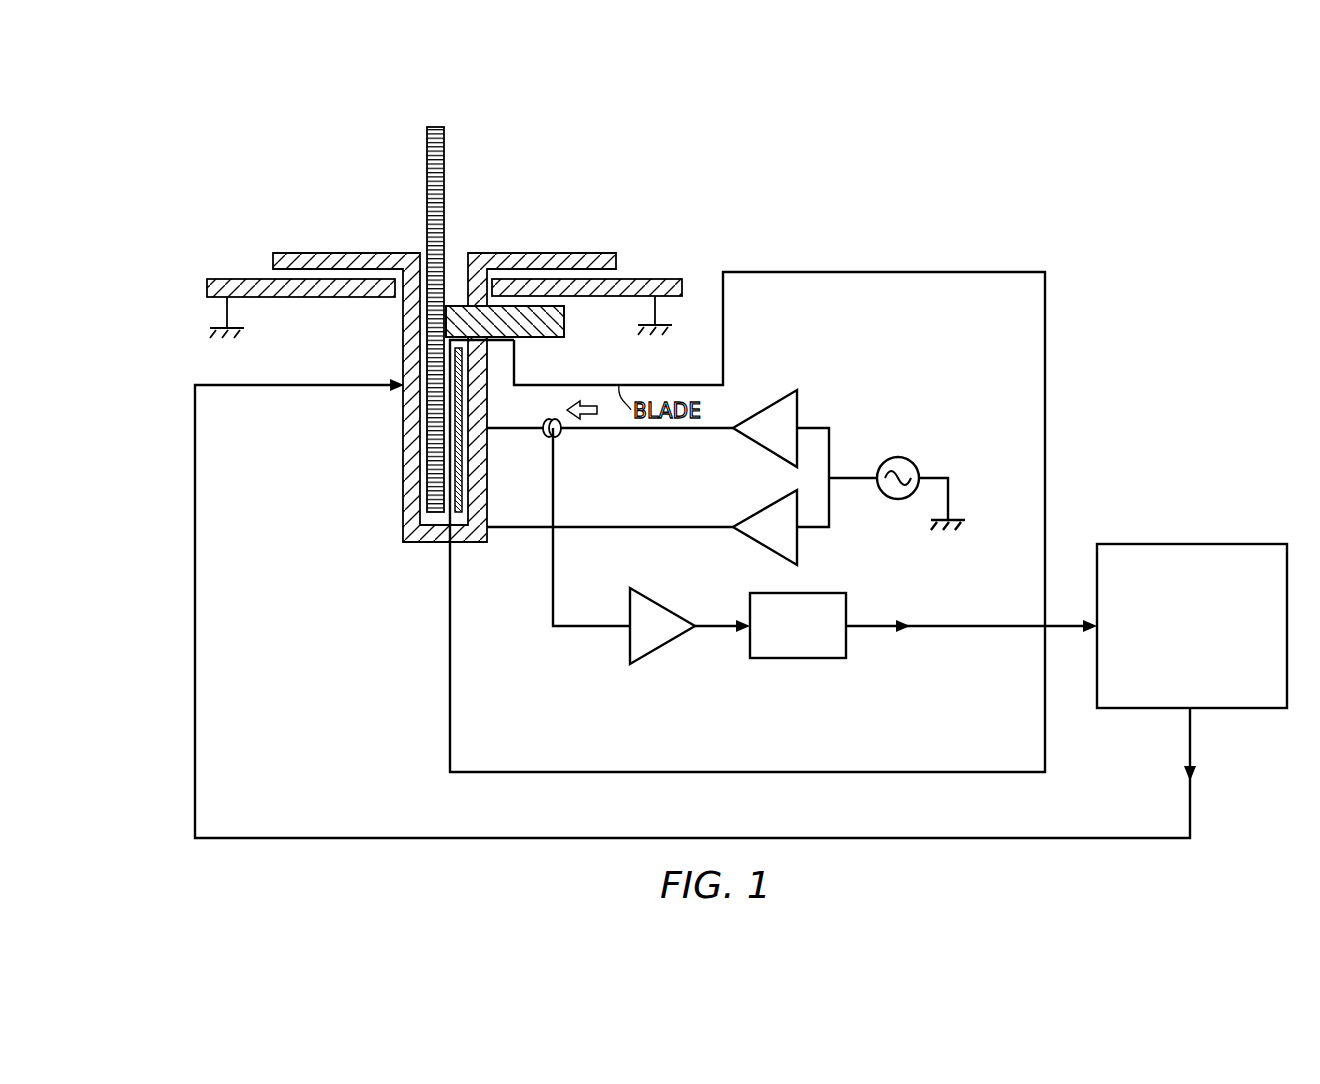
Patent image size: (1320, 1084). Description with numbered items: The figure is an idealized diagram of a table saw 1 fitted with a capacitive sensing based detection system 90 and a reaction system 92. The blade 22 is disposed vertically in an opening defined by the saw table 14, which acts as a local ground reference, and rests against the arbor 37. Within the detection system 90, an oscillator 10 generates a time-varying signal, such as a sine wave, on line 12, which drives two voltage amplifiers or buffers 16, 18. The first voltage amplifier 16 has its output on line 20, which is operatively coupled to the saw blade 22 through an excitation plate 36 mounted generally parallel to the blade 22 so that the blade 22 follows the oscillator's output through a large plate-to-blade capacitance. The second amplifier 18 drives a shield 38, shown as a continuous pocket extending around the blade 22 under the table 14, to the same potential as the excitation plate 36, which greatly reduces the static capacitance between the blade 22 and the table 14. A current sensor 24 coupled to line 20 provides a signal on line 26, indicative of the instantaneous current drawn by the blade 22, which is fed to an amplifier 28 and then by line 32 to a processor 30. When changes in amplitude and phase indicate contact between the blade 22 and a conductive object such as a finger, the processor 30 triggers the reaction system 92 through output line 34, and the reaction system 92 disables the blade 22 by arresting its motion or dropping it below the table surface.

The table saw 1 is at (781, 189).
The oscillator 10 is at (915, 462).
The line 12 is at (829, 443).
The saw table 14 is at (234, 279).
The first voltage amplifier 16 is at (797, 403).
The second amplifier 18 is at (797, 548).
The line 20 is at (658, 430).
The blade 22 is at (435, 513).
The current sensor 24 is at (561, 433).
The line 26 is at (585, 628).
The amplifier 28 is at (665, 645).
The processor 30 is at (808, 659).
The line 32 is at (710, 630).
The output line 34 is at (930, 624).
The excitation plate 36 is at (458, 513).
The arbor 37 is at (530, 338).
The shield 38 is at (403, 477).
The detection system 90 is at (960, 272).
The reaction system 92 is at (1180, 544).